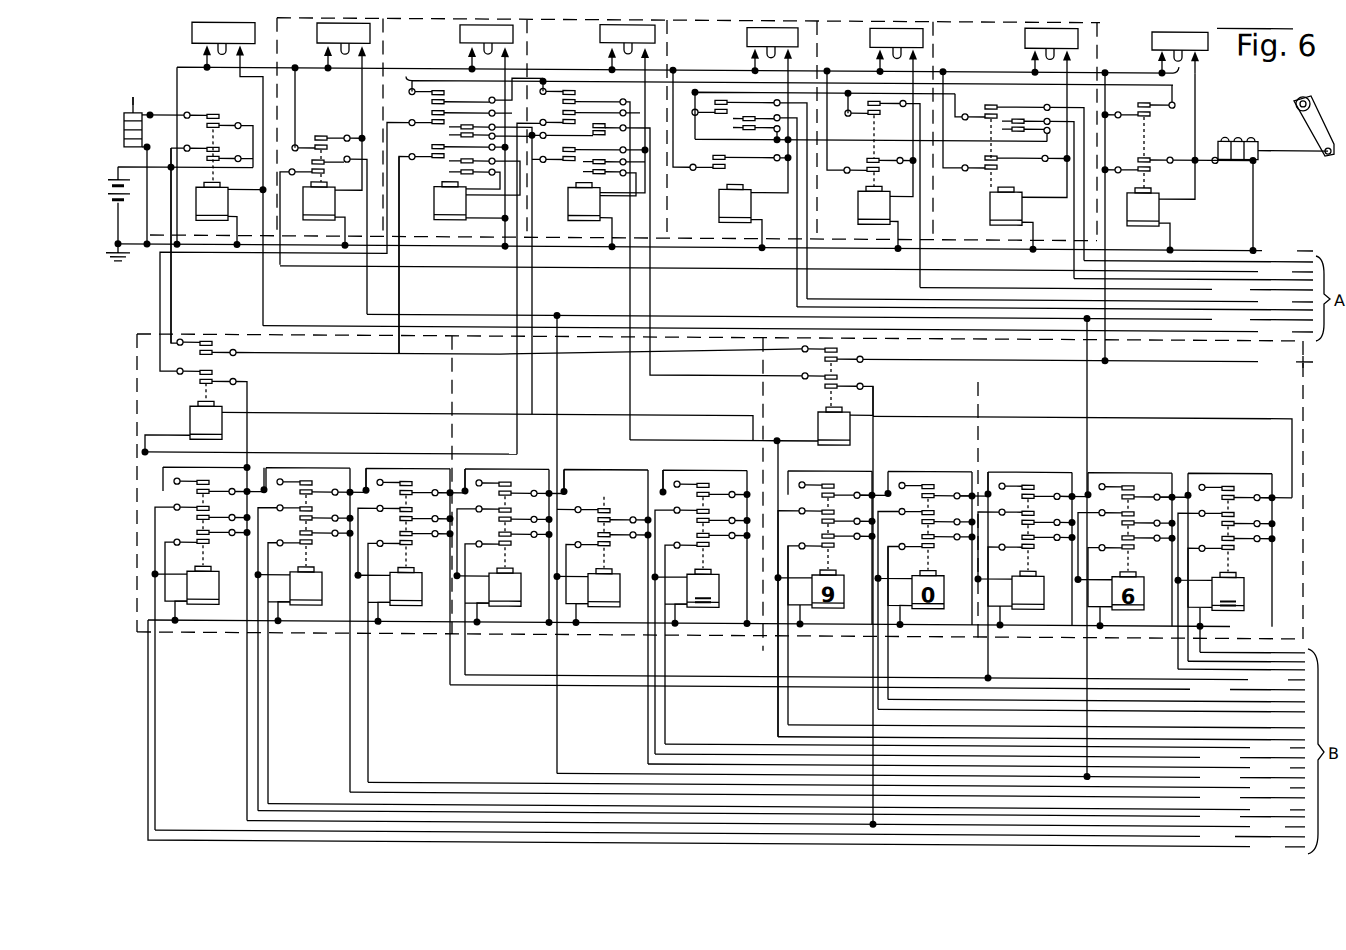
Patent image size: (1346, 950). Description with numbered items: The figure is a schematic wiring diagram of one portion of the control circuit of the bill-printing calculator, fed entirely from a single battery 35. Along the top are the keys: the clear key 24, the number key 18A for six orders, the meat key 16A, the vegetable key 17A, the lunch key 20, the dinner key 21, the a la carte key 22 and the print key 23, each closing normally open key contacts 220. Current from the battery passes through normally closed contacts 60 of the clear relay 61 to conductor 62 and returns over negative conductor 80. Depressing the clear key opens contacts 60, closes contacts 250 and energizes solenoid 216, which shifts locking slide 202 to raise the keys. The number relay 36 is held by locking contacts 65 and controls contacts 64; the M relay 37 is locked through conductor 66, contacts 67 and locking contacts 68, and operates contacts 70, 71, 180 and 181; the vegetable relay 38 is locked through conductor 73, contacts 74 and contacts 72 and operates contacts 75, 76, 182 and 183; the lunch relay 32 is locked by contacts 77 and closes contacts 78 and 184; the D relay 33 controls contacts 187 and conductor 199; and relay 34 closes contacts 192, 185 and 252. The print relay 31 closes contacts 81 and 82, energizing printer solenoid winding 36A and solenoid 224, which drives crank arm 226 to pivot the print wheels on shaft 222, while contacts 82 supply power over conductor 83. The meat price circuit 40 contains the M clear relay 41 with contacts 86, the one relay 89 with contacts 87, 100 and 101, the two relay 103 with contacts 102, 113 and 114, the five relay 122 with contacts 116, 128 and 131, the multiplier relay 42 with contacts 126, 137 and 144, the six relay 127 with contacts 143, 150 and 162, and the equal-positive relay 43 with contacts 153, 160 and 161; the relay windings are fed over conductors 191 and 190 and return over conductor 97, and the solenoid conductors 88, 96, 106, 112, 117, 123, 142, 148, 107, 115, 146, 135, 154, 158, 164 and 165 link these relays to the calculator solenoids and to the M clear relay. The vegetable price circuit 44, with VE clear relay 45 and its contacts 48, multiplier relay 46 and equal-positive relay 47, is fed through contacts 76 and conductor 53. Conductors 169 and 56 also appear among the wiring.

The clear key 24 is at (192, 37).
The number key 18A is at (317, 33).
The meat key 16A is at (460, 33).
The vegetable key 17A is at (600, 32).
The L key 20 is at (747, 33).
The D key 21 is at (870, 32).
The A key 22 is at (1025, 32).
The print key 23 is at (1152, 37).
The control relay switch 220 is at (203, 55).
The conductor 62 is at (190, 72).
The conductor 83 is at (1168, 88).
The conductor 80 is at (150, 250).
The solenoid 216 is at (122, 118).
The locking slide 202 is at (136, 104).
The contacts 250 is at (226, 110).
The contacts 60 is at (218, 154).
The source of potential 35 is at (178, 212).
The clear relay 61 is at (196, 216).
The locking contacts 65 is at (317, 140).
The contacts 64 is at (329, 172).
The number relay 36 is at (306, 220).
The contacts 70 is at (443, 95).
The contacts 71 is at (422, 118).
The locking contacts 68 is at (420, 148).
The contacts 180 is at (458, 130).
The contacts 181 is at (461, 164).
The M relay 37 is at (434, 210).
The contacts 75 is at (580, 94).
The contacts 76 is at (566, 117).
The contacts 182 is at (612, 124).
The contacts 72 is at (566, 154).
The contacts 183 is at (593, 164).
The vegetable relay 38 is at (568, 210).
The contacts 78 is at (724, 100).
The contacts 184 is at (742, 120).
The locking contacts 77 is at (708, 160).
The lunch relay 32 is at (719, 212).
The contacts 187 is at (880, 112).
The D relay 33 is at (858, 212).
The contacts 192 is at (986, 110).
The contacts 185 is at (1010, 124).
The contacts 252 is at (997, 164).
The relay 34 is at (990, 218).
The conductor 73 is at (1107, 160).
The contacts 82 is at (1154, 112).
The contacts 81 is at (1154, 168).
The print relay winding 31 is at (1143, 222).
The printer solenoid winding 36A is at (1230, 164).
The crank arm 226 is at (1318, 118).
The shaft 222 is at (1308, 94).
The solenoid 224 is at (1243, 128).
The conductor 107 is at (310, 268).
The conductor 115 is at (367, 286).
The conductor 169 is at (269, 322).
The conductor 199 is at (923, 206).
The conductor 56 is at (807, 288).
The conductor 53 is at (631, 283).
The conductor 146 is at (560, 387).
The conductor 191 is at (362, 455).
The conductor 165 is at (282, 415).
The price circuit 40 is at (137, 356).
The conductor 190 is at (137, 518).
The conductor 66 is at (171, 328).
The contacts 67 is at (224, 344).
The contacts 86 is at (230, 385).
The M clear relay 41 is at (223, 428).
The contacts 74 is at (843, 352).
The contacts 48 is at (843, 379).
The contacts 162 is at (925, 358).
The VE clear relay 45 is at (850, 432).
The vegetable price circuit 44 is at (982, 450).
The contacts 101 is at (207, 488).
The holding contacts 100 is at (212, 514).
The contacts 87 is at (193, 542).
The one relay 89 is at (219, 587).
The contacts 114 is at (310, 488).
The contacts 113 is at (314, 514).
The contacts 102 is at (300, 542).
The two relay 103 is at (322, 587).
The contacts 128 is at (410, 488).
The contacts 131 is at (414, 514).
The contacts 116 is at (400, 542).
The five relay 122 is at (422, 587).
The contact 144 is at (509, 488).
The holding contacts 137 is at (513, 514).
The contacts 126 is at (499, 542).
The multiplier relay 42 is at (521, 587).
The contacts 150 is at (611, 514).
The contacts 143 is at (598, 542).
The six relay 127 is at (620, 587).
The contacts 161 is at (707, 488).
The contacts 160 is at (710, 514).
The contacts 153 is at (698, 542).
The equal-positive relay 43 is at (719, 594).
The multiplier relay 46 is at (1041, 588).
The equal-positive relay 47 is at (1245, 590).
The conductor 142 is at (462, 658).
The conductor 148 is at (450, 650).
The conductor 164 is at (665, 726).
The conductor 158 is at (655, 716).
The conductor 154 is at (648, 670).
The conductor 135 is at (557, 736).
The conductor 117 is at (368, 730).
The conductor 123 is at (350, 682).
The conductor 106 is at (268, 720).
The conductor 112 is at (258, 742).
The conductor 97 is at (247, 682).
The conductor 88 is at (157, 748).
The conductor 96 is at (715, 737).